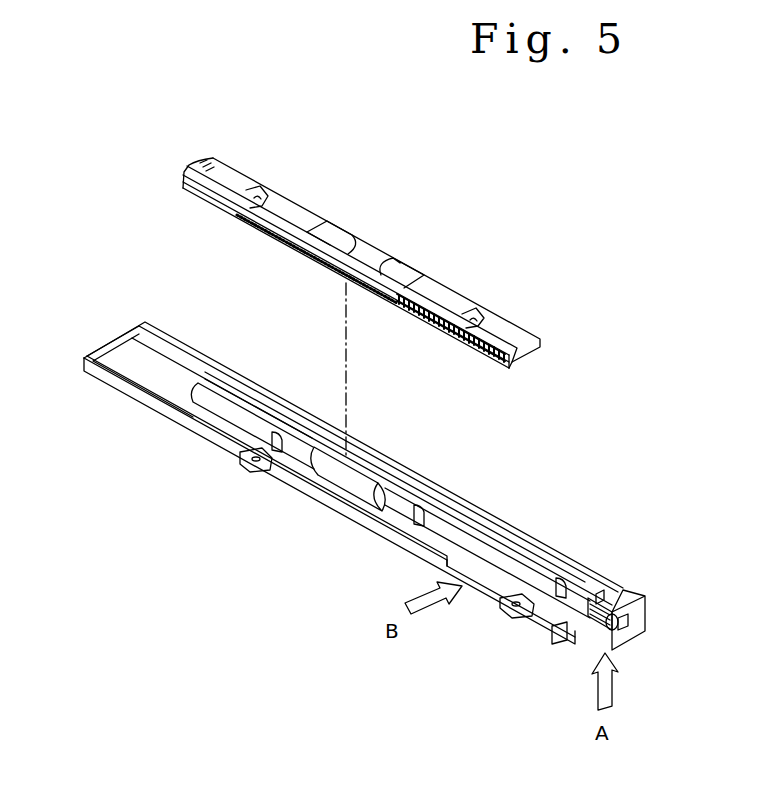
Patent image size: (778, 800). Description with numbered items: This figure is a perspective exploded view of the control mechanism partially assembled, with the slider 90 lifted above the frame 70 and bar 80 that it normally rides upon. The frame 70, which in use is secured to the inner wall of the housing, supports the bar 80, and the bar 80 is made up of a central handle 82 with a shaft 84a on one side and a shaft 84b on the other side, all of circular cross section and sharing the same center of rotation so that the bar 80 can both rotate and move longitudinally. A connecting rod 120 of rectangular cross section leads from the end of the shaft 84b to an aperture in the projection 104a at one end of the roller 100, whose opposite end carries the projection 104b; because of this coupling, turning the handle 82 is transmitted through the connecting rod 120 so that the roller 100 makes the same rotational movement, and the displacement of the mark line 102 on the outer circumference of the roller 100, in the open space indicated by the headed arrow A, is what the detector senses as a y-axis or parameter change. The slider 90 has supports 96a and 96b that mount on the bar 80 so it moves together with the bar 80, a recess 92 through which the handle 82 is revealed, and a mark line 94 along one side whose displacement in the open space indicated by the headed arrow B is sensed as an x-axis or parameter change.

The frame 70 is at (103, 328).
The bar 80 is at (203, 370).
The handle 82 is at (366, 465).
The shaft 84a is at (233, 398).
The shaft 84b is at (479, 537).
The slider 90 is at (194, 147).
The recess 92 is at (353, 240).
The mark line 94 is at (497, 368).
The support 96a is at (264, 188).
The support 96b is at (478, 310).
The roller 100 is at (598, 630).
The mark line 102 is at (620, 600).
The projection 104a is at (600, 594).
The projection 104b is at (640, 630).
The connecting rod 120 is at (562, 580).